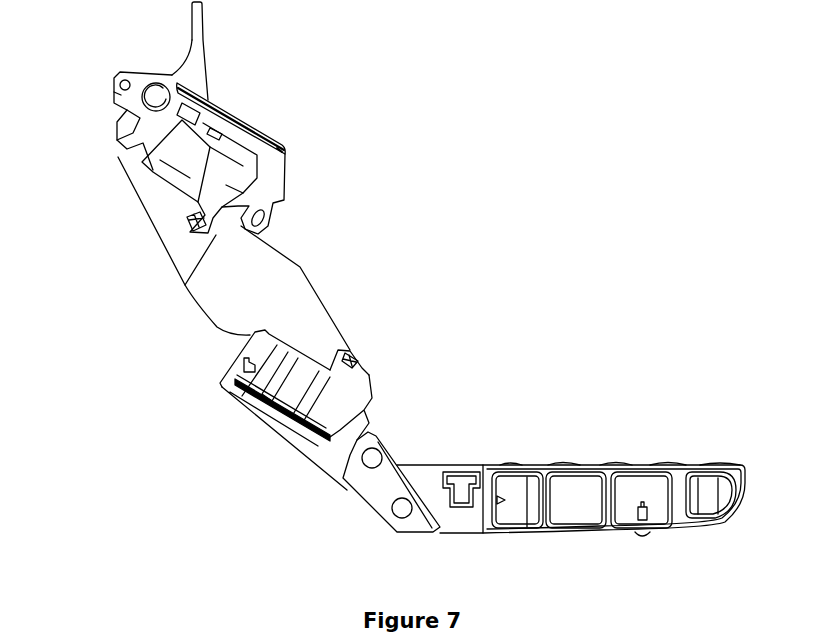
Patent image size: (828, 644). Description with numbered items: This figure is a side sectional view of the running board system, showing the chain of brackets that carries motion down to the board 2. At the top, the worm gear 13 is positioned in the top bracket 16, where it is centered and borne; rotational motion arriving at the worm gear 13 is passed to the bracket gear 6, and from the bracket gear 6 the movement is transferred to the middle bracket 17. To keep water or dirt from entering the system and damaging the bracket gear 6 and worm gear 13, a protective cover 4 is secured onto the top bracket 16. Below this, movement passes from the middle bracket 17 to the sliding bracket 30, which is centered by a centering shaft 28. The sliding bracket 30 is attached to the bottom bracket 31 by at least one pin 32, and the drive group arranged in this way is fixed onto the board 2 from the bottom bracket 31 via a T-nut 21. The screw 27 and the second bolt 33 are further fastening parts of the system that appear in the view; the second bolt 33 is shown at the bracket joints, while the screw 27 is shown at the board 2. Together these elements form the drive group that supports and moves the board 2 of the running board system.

The board 2 is at (683, 463).
The protective cover 4 is at (247, 127).
The bracket gear 6 is at (247, 153).
The worm gear 13 is at (150, 92).
The top bracket 16 is at (199, 14).
The middle bracket 17 is at (290, 280).
The T-nut 21 is at (467, 487).
The screw 27 is at (640, 515).
The centering shaft 28 is at (147, 160).
The sliding bracket 30 is at (390, 468).
The bottom bracket 31 is at (457, 522).
The pin 32 is at (393, 507).
The second bolt 33 is at (183, 182).